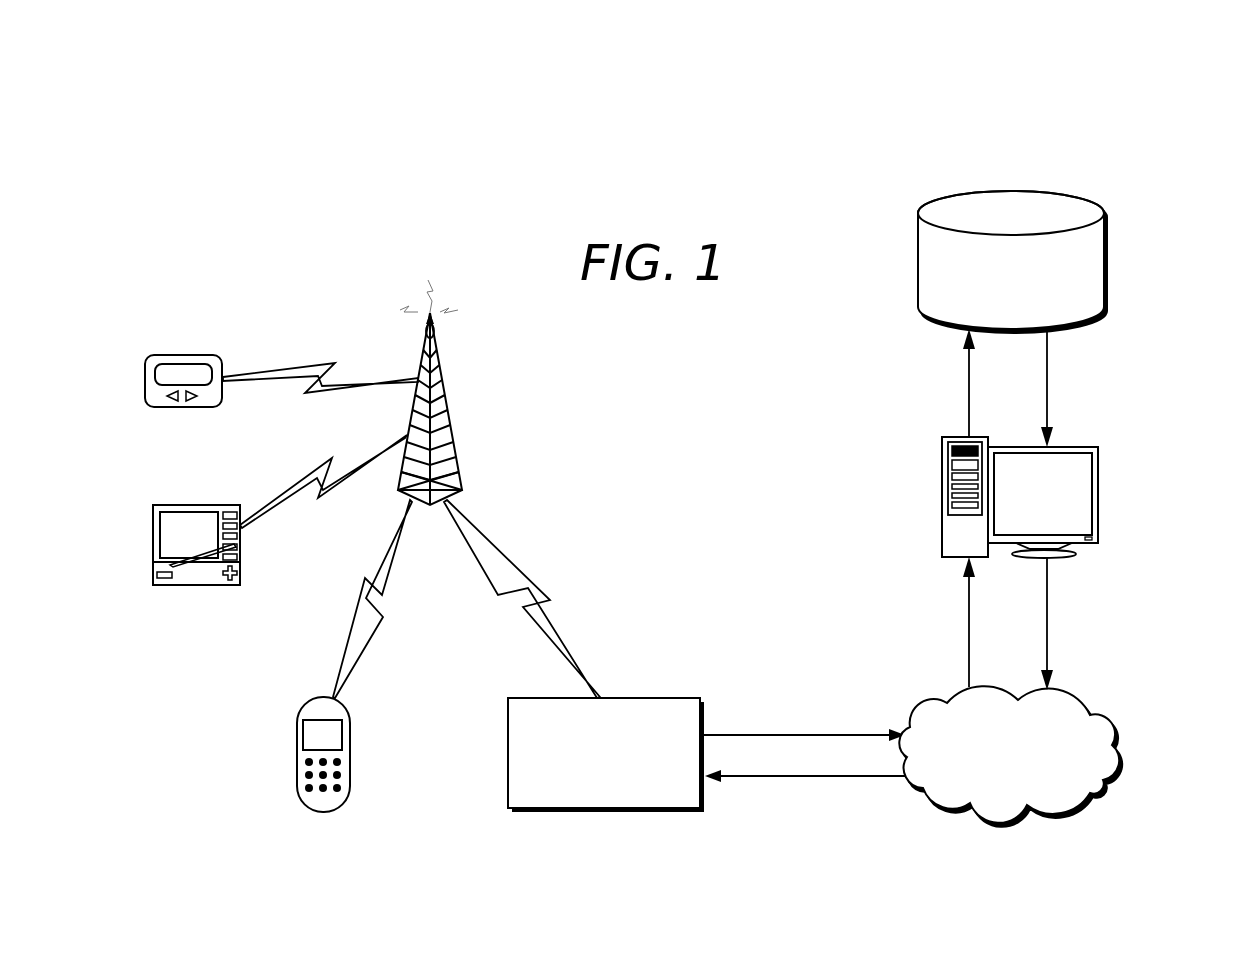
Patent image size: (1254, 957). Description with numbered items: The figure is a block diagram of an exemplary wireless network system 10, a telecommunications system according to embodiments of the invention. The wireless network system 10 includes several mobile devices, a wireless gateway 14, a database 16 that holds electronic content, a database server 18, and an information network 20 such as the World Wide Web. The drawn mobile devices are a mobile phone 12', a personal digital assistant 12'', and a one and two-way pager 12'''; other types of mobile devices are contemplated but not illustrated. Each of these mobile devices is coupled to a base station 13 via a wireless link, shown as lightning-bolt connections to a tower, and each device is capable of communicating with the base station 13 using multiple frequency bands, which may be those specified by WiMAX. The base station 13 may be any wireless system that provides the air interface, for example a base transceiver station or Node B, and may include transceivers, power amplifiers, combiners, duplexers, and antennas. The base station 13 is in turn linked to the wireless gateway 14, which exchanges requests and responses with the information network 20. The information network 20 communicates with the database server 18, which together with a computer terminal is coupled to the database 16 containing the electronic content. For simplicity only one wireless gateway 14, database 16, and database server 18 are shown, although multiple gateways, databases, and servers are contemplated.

The wireless network system 10 is at (1192, 147).
The mobile phone 12' is at (337, 656).
The personal digital assistant 12'' is at (261, 510).
The one and two-way pager 12''' is at (261, 395).
The base station 13 is at (452, 425).
The wireless gateway 14 is at (508, 756).
The database 16 is at (1105, 253).
The database server 18 is at (942, 488).
The information network 20 is at (1119, 758).